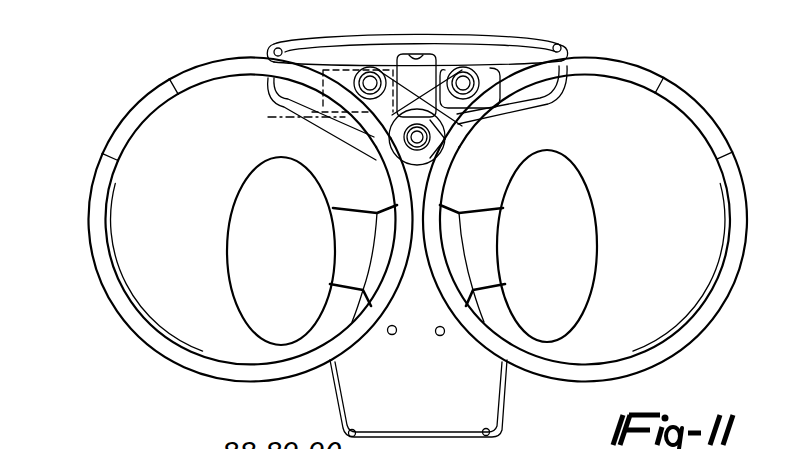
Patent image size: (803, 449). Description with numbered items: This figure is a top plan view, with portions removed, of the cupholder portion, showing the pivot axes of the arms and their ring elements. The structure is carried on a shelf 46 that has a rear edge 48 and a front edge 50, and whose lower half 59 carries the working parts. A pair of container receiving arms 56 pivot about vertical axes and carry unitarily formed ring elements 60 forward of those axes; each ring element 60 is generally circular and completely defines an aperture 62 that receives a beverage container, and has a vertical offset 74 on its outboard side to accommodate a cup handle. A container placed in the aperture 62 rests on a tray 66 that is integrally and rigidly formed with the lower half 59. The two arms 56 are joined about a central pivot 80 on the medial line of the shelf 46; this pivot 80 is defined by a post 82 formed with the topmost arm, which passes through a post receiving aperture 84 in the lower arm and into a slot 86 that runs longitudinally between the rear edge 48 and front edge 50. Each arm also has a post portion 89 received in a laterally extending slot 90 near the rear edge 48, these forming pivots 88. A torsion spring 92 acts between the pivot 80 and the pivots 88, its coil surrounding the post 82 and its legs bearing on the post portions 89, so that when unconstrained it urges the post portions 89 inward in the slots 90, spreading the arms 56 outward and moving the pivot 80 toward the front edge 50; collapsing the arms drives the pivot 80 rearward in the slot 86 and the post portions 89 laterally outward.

The shelf 46 is at (315, 402).
The rear edge 48 is at (303, 40).
The front edge 50 is at (507, 447).
The container receiving arms 56 is at (192, 60).
The lower half of the shelf 59 is at (440, 394).
The ring elements 60 is at (88, 247).
The aperture 62 is at (127, 293).
The tray 66 is at (273, 205).
The vertical offset 74 is at (697, 110).
The central pivot 80 is at (410, 147).
The post 82 is at (405, 140).
The post receiving aperture 84 is at (443, 147).
The slot 86 is at (425, 54).
The pivots 88 is at (371, 67).
The post portions 89 is at (376, 66).
The slots 90 is at (268, 92).
The torsion spring 92 is at (286, 116).